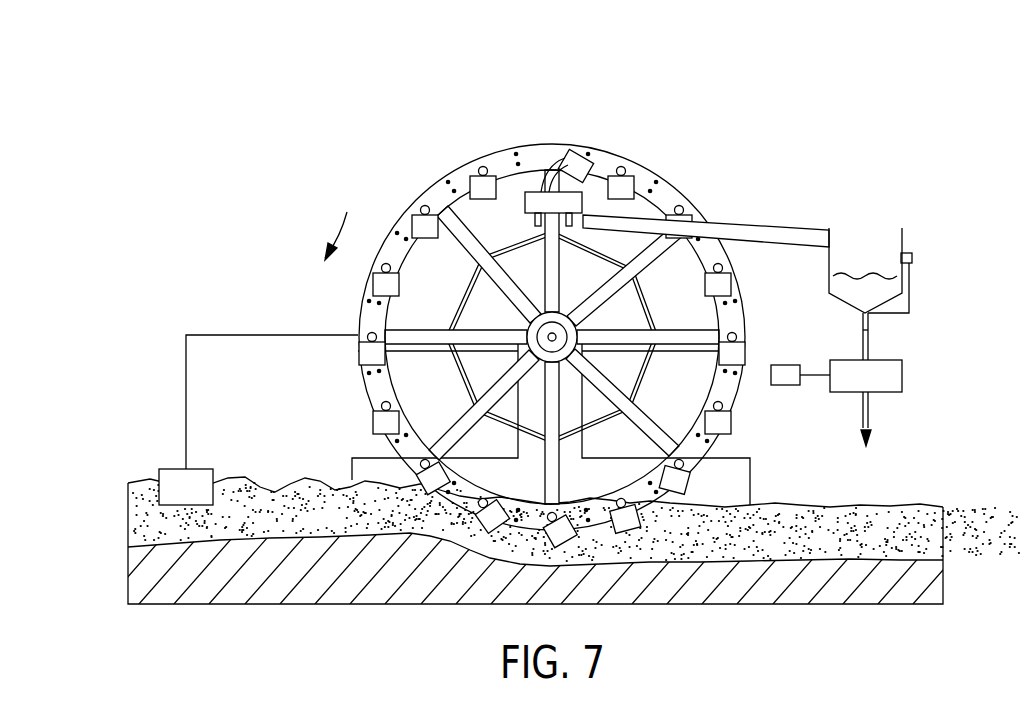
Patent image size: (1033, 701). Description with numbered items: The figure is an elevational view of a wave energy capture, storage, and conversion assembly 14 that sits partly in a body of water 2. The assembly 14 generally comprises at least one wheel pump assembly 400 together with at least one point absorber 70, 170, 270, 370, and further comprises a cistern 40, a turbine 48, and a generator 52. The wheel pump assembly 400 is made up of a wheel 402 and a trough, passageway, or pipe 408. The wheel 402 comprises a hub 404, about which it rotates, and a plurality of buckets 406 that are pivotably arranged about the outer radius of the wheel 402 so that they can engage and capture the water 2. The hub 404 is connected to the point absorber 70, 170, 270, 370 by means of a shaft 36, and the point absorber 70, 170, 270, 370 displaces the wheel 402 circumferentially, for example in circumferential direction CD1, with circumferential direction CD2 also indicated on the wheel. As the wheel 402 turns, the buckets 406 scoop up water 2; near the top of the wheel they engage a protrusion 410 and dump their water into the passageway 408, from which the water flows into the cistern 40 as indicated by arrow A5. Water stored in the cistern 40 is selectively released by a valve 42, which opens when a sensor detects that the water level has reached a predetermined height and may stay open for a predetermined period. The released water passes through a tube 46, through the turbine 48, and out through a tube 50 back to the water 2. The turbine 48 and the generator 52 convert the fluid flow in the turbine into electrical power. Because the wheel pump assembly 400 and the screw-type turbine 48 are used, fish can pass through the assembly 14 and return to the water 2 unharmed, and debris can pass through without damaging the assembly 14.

The wave energy capture, storage, and conversion assembly 14 is at (740, 131).
The wheel pump assembly 400 is at (481, 133).
The wheel 402 is at (366, 318).
The hub 404 is at (540, 332).
The buckets 406 is at (418, 213).
The passageway 408 is at (793, 228).
The protrusion 410 is at (580, 186).
The arrow A5 is at (838, 242).
The cistern 40 is at (829, 286).
The valve 42 is at (862, 314).
The tube 46 is at (870, 330).
The turbine 48 is at (903, 380).
The tube 50 is at (872, 413).
The generator 52 is at (786, 386).
The shaft 36 is at (248, 336).
The point absorber 70 is at (156, 460).
The point absorber 170 is at (127, 439).
The point absorber 270 is at (127, 439).
The point absorber 370 is at (127, 439).
The water 2 is at (303, 498).
The circumferential direction CD1 is at (343, 212).
The circumferential direction CD2 is at (308, 250).